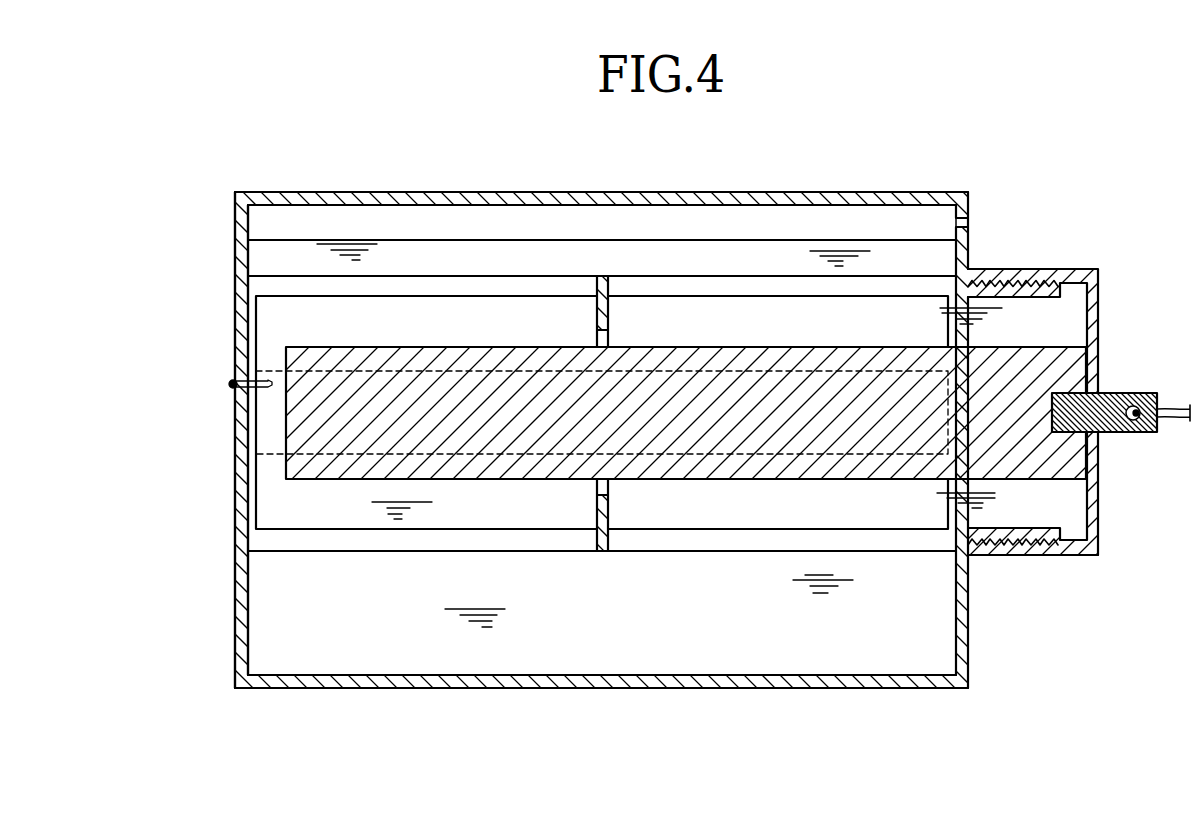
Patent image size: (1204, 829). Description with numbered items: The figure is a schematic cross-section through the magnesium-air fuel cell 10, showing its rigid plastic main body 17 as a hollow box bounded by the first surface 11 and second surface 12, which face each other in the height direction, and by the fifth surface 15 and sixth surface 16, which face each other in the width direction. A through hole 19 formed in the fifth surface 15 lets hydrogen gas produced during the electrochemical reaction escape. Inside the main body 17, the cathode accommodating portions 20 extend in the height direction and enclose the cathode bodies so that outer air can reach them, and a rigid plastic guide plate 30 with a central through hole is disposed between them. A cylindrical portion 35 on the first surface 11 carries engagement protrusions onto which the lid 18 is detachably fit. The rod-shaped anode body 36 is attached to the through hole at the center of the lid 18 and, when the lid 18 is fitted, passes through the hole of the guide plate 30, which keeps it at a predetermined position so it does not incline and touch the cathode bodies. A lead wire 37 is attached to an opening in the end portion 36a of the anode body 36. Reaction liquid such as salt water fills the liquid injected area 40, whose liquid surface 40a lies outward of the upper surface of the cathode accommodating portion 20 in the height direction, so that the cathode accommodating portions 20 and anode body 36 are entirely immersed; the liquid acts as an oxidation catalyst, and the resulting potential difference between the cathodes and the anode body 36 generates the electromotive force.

The magnesium-air fuel cell 10 is at (1052, 150).
The first surface 11 is at (970, 617).
The second surface 12 is at (235, 472).
The fifth surface 15 is at (700, 192).
The sixth surface 16 is at (643, 690).
The main body 17 is at (845, 701).
The lid 18 is at (1042, 563).
The through hole 19 is at (970, 223).
The cathode accommodating portion 20 is at (516, 275).
The guide plate 30 is at (603, 310).
The cylindrical portion 35 is at (1040, 533).
The anode body 36 is at (747, 463).
The end portion of the anode body 36a is at (1118, 392).
The lead wire 37 is at (1169, 419).
The liquid injected area 40 is at (559, 636).
The liquid surface 40a is at (769, 240).